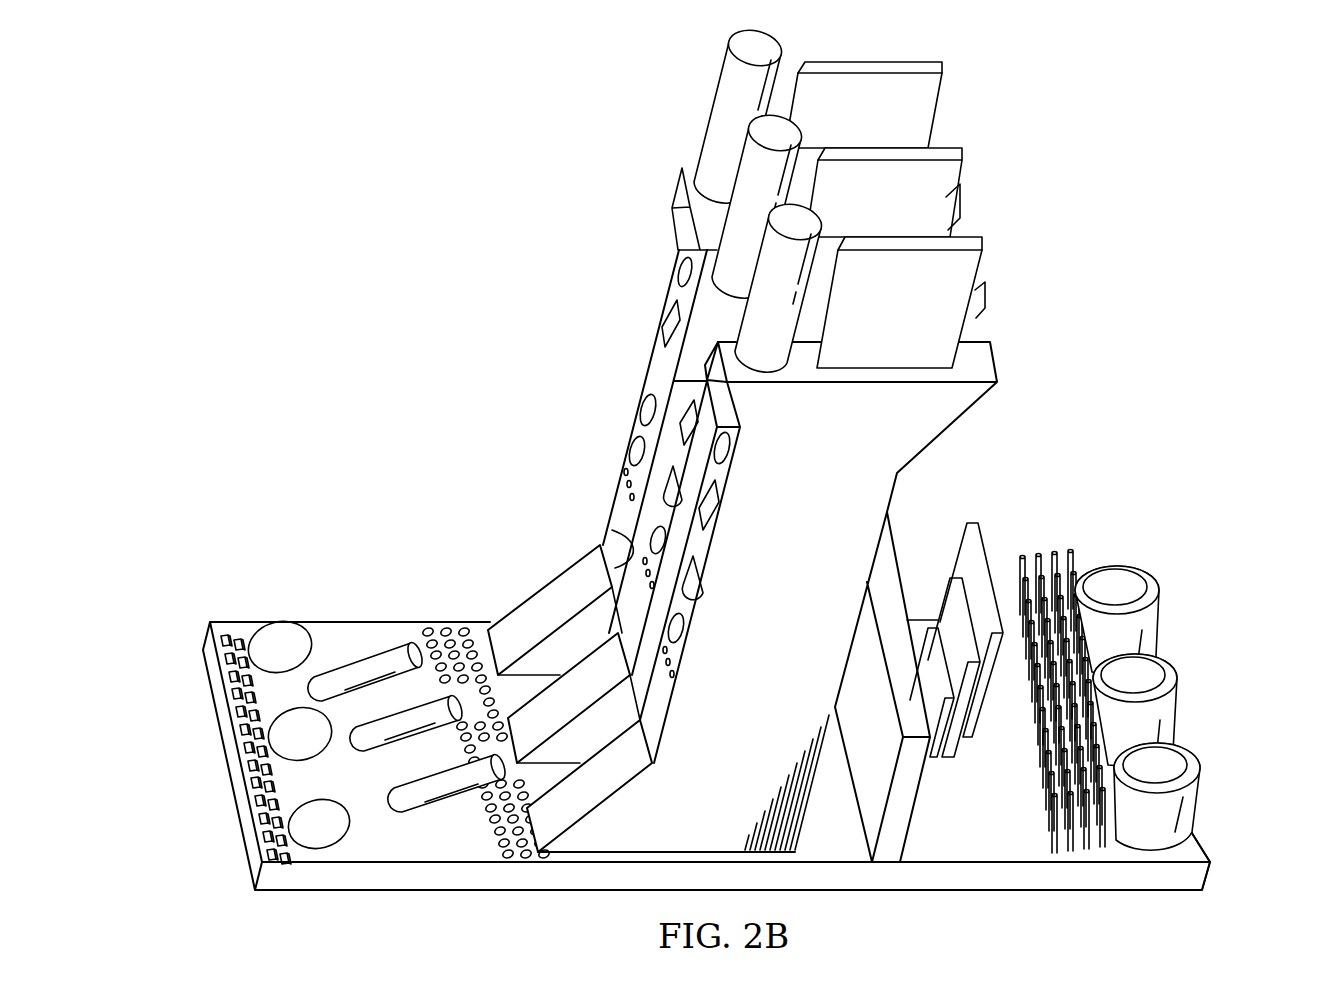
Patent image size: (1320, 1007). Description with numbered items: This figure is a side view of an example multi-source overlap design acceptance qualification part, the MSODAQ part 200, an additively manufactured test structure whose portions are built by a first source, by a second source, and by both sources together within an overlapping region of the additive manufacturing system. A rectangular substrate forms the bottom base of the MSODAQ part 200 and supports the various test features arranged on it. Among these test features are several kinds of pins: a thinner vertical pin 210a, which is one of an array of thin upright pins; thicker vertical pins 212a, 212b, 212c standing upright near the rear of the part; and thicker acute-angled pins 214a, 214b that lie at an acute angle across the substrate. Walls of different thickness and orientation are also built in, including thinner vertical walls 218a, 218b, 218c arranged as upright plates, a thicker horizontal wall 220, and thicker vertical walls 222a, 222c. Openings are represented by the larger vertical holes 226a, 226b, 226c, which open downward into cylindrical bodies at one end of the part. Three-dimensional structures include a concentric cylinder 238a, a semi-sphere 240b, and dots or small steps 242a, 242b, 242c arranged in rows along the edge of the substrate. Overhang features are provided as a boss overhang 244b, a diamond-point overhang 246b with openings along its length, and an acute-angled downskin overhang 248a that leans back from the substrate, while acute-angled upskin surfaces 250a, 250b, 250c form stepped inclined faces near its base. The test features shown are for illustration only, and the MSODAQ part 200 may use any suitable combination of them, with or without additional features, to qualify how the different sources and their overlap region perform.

The MSODAQ part 200 is at (328, 93).
The thinner vertical pin 210a is at (1093, 857).
The thicker vertical pin 212a is at (812, 315).
The thicker vertical pin 212b is at (726, 62).
The thicker vertical pin 212c is at (737, 148).
The thicker acute-angled pin 214a is at (418, 768).
The thicker acute-angled pin 214b is at (398, 646).
The thinner vertical wall 218a is at (975, 265).
The thinner vertical wall 218b is at (942, 88).
The thinner vertical wall 218c is at (962, 177).
The thicker horizontal wall 220 is at (910, 824).
The thicker vertical wall 222a is at (870, 500).
The thicker vertical wall 222c is at (613, 552).
The larger vertical hole 226a is at (1164, 764).
The larger vertical hole 226b is at (1118, 580).
The larger vertical hole 226c is at (1143, 673).
The concentric cylinder 238a is at (1195, 835).
The semi-sphere 240b is at (286, 634).
The dots or small steps 242a is at (268, 850).
The dots or small steps 242b is at (235, 632).
The dots or small steps 242c is at (245, 740).
The boss overhang 244b is at (678, 190).
The diamond-point overhang 246b is at (642, 350).
The acute-angled downskin overhang 248a is at (982, 430).
The acute-angled upskin surface 250a is at (550, 823).
The acute-angled upskin surface 250b is at (566, 585).
The acute-angled upskin surface 250c is at (600, 672).